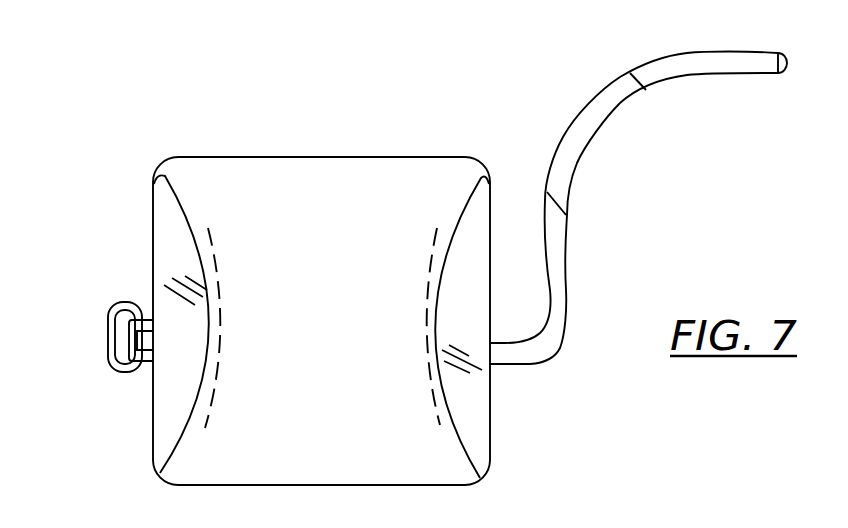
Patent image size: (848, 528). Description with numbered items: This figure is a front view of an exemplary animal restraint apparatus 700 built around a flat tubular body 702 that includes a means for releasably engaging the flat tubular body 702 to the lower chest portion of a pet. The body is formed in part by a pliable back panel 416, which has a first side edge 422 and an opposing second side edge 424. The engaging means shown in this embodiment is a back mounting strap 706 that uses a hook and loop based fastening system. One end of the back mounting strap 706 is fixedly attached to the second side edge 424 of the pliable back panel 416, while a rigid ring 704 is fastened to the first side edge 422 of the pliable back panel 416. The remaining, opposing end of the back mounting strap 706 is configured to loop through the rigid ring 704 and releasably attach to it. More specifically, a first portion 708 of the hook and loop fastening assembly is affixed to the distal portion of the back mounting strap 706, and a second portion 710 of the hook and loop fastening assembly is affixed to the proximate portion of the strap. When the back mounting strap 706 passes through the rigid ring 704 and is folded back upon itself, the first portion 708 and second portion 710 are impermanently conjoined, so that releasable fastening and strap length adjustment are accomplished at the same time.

The animal restraint apparatus 700 is at (122, 100).
The flat tubular body 702 is at (343, 337).
The rigid ring 704 is at (114, 372).
The back mounting strap 706 is at (536, 57).
The first portion of hook and loop fastening assembly 708 is at (690, 62).
The second portion of hook and loop fastening assembly 710 is at (585, 137).
The pliable back panel 416 is at (477, 446).
The first side edge 422 is at (153, 198).
The second side edge 424 is at (490, 405).